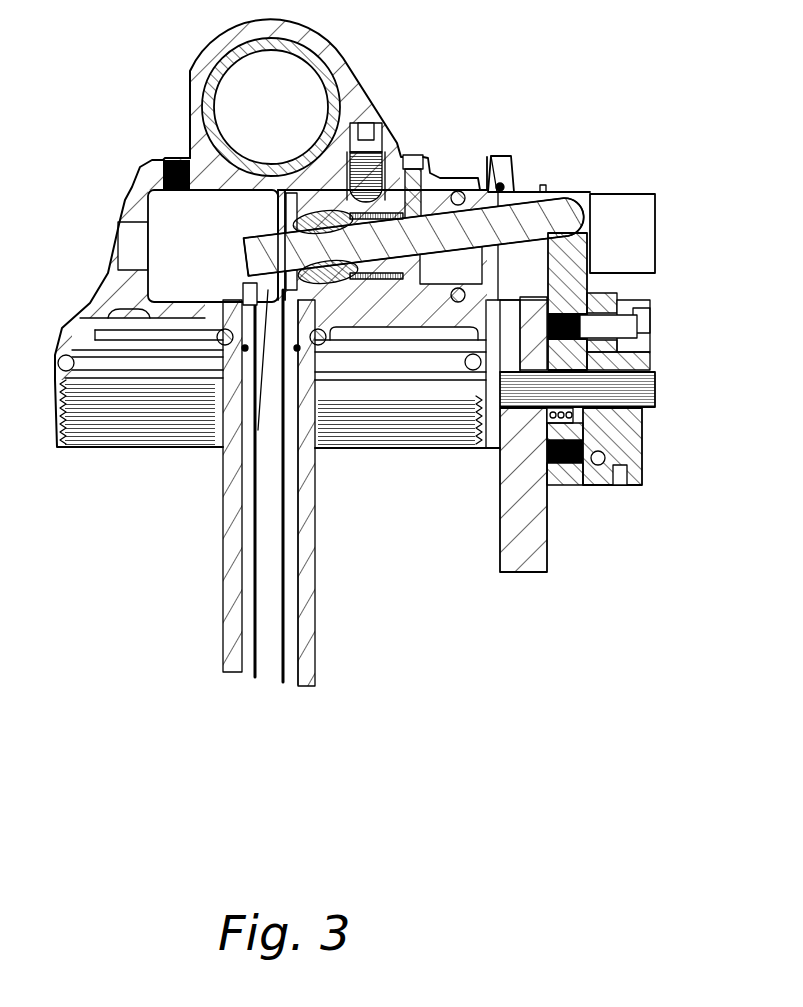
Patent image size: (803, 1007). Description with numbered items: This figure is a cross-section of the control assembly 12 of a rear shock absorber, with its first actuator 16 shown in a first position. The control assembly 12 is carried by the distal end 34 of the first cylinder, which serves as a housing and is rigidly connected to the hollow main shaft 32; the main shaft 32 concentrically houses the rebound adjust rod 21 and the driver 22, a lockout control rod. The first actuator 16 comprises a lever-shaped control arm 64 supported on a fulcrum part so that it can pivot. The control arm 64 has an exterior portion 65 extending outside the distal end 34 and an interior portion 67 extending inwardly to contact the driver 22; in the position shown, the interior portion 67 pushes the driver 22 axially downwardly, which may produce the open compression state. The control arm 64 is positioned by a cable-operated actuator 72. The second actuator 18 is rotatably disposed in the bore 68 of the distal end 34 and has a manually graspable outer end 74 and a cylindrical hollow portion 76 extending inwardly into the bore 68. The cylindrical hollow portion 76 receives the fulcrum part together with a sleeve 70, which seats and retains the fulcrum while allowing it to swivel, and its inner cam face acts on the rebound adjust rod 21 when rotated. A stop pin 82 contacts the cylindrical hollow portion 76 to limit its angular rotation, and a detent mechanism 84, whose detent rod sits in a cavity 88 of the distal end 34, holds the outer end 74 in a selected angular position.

The control assembly 12 is at (580, 165).
The first actuator 16 is at (583, 210).
The second actuator 18 is at (495, 158).
The rebound adjust rod 21 is at (285, 592).
The driver 22 is at (272, 647).
The main shaft 32 is at (418, 490).
The distal end 34 is at (430, 178).
The control arm 64 is at (573, 222).
The exterior portion 65 is at (508, 232).
The interior portion 67 is at (257, 237).
The bore 68 is at (203, 192).
The sleeve 70 is at (397, 250).
The actuator 72 is at (640, 500).
The outer end 74 is at (513, 158).
The cylindrical hollow portion 76 is at (393, 193).
The stop pin 82 is at (425, 172).
The detent mechanism 84 is at (358, 115).
The cavity 88 is at (350, 173).